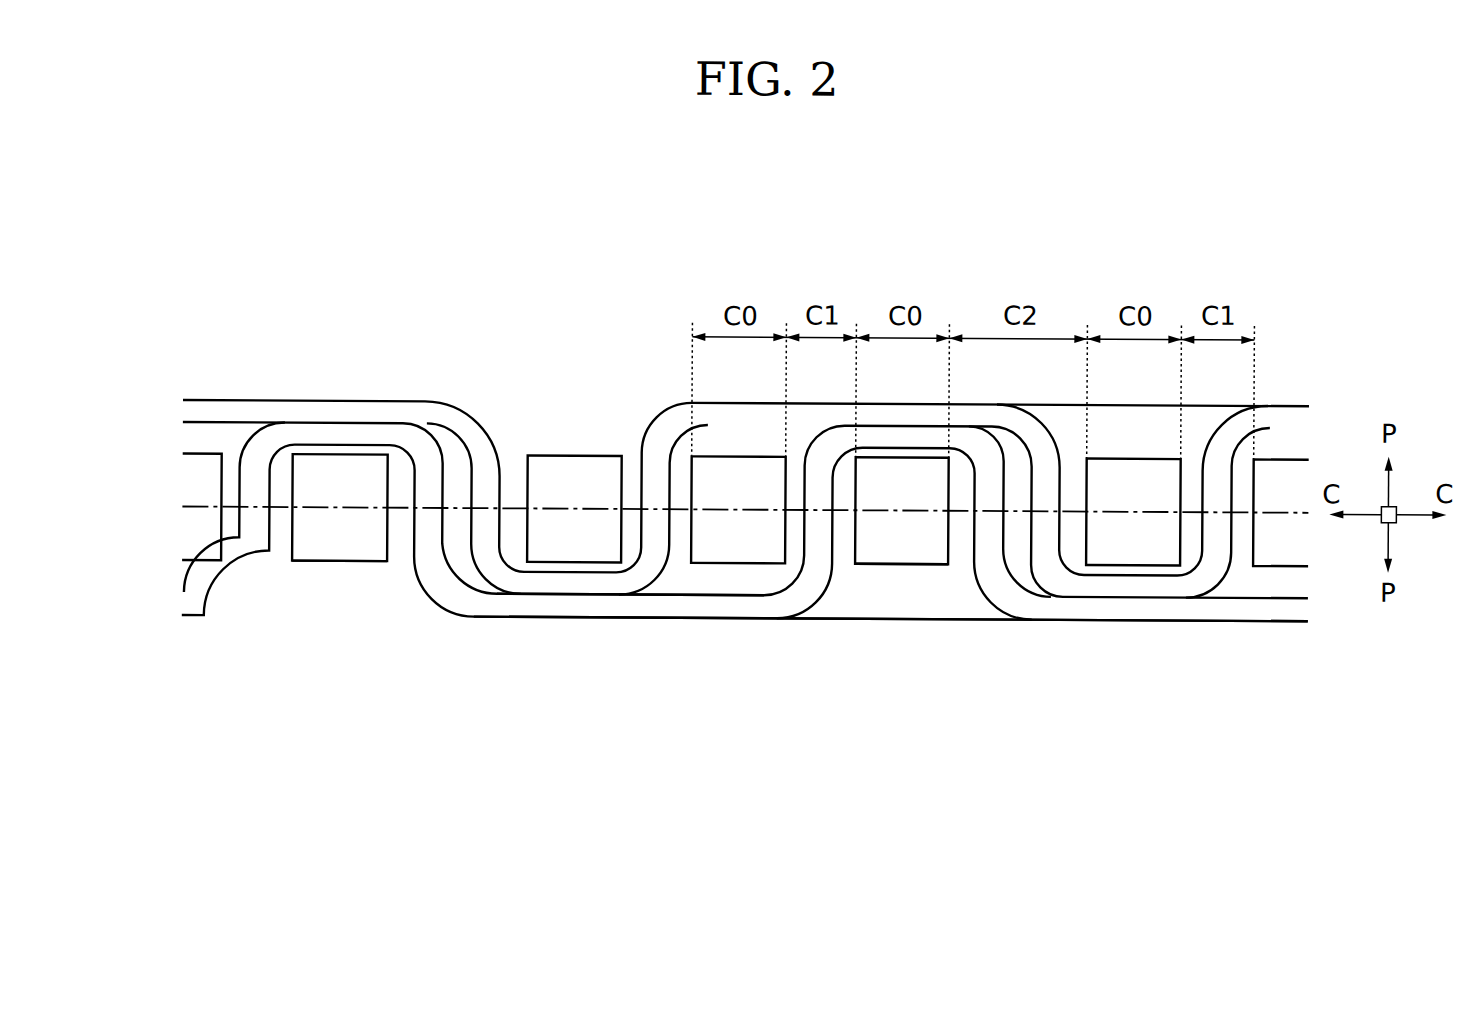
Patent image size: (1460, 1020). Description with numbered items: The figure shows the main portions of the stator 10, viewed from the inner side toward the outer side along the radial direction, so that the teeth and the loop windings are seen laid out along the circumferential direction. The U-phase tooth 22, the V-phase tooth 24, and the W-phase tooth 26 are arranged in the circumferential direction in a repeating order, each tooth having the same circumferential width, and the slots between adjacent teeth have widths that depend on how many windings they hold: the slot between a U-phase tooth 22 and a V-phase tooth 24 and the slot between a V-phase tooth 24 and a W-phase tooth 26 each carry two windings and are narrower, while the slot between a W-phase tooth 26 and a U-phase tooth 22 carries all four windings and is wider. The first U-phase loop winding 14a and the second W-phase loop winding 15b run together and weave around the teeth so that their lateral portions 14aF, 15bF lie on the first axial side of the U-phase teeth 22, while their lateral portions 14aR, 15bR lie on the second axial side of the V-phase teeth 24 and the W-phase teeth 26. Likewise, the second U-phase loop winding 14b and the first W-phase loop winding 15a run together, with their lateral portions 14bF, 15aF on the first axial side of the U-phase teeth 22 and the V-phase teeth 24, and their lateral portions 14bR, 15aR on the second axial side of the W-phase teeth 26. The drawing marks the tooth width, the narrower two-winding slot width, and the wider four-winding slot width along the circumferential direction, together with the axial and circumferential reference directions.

The stator 10 is at (243, 278).
The first U-phase loop winding 14a is at (712, 444).
The second W-phase loop winding 15b is at (178, 395).
The lateral portion of the first U-phase loop winding 14aR is at (746, 442).
The lateral portion of the second W-phase loop winding 15bR is at (395, 408).
The lateral portion of the first W-phase loop winding 15aR is at (746, 480).
The lateral portion of the second U-phase loop winding 14bR is at (298, 440).
The first W-phase loop winding 15a is at (183, 506).
The second U-phase loop winding 14b is at (176, 588).
The lateral portion of the first U-phase loop winding 14aF is at (630, 633).
The lateral portion of the second W-phase loop winding 15bF is at (545, 578).
The lateral portion of the first W-phase loop winding 15aF is at (890, 666).
The lateral portion of the second U-phase loop winding 14bF is at (678, 605).
The U-phase tooth 22 is at (572, 466).
The V-phase tooth 24 is at (738, 461).
The W-phase tooth 26 is at (340, 552).